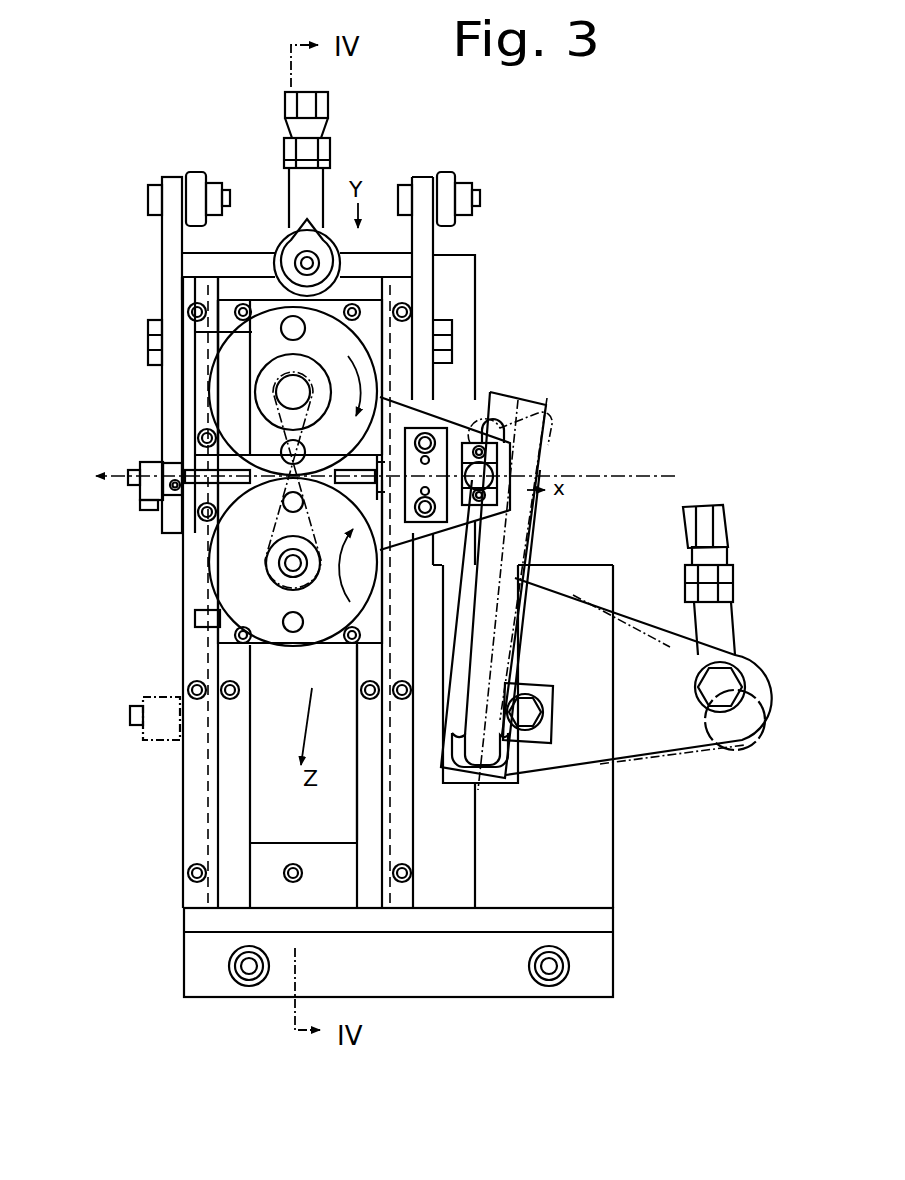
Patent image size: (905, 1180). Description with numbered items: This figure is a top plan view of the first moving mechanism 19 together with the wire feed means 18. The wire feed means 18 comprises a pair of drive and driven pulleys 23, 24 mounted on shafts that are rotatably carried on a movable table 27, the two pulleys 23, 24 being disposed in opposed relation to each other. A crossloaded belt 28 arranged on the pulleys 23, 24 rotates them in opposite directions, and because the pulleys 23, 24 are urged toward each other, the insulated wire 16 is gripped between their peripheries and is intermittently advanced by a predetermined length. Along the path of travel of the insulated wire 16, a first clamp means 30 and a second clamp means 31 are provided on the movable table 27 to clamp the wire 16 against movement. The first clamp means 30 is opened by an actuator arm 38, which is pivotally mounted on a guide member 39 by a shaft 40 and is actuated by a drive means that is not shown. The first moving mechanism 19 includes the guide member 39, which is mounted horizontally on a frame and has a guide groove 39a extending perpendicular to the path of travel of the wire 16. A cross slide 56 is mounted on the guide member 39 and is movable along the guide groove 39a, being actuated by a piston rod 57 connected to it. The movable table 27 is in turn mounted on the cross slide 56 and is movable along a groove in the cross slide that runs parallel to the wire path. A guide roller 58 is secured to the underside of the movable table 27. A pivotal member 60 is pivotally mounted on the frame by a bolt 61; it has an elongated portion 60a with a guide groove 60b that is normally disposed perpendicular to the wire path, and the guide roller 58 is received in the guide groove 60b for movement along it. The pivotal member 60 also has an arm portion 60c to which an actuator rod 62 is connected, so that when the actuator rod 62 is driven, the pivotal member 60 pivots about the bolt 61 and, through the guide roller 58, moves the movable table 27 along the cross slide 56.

The insulated wire 16 is at (624, 471).
The wire feed means 18 is at (203, 393).
The first moving mechanism 19 is at (488, 273).
The drive pulley 23 is at (243, 614).
The driven pulley 24 is at (222, 375).
The movable table 27 is at (200, 410).
The crossloaded belt 28 is at (262, 572).
The first clamp means 30 is at (160, 467).
The second clamp means 31 is at (428, 430).
The actuator arm 38 is at (168, 300).
The guide member 39 is at (193, 283).
The guide groove 39a is at (220, 770).
The shaft 40 is at (152, 337).
The cross slide 56 is at (228, 305).
The piston rod 57 is at (296, 187).
The guide roller 58 is at (482, 462).
The pivotal member 60 is at (520, 775).
The elongated portion 60a is at (563, 513).
The guide groove 60b is at (490, 750).
The arm portion 60c is at (618, 635).
The bolt 61 is at (545, 711).
The actuator rod 62 is at (705, 613).